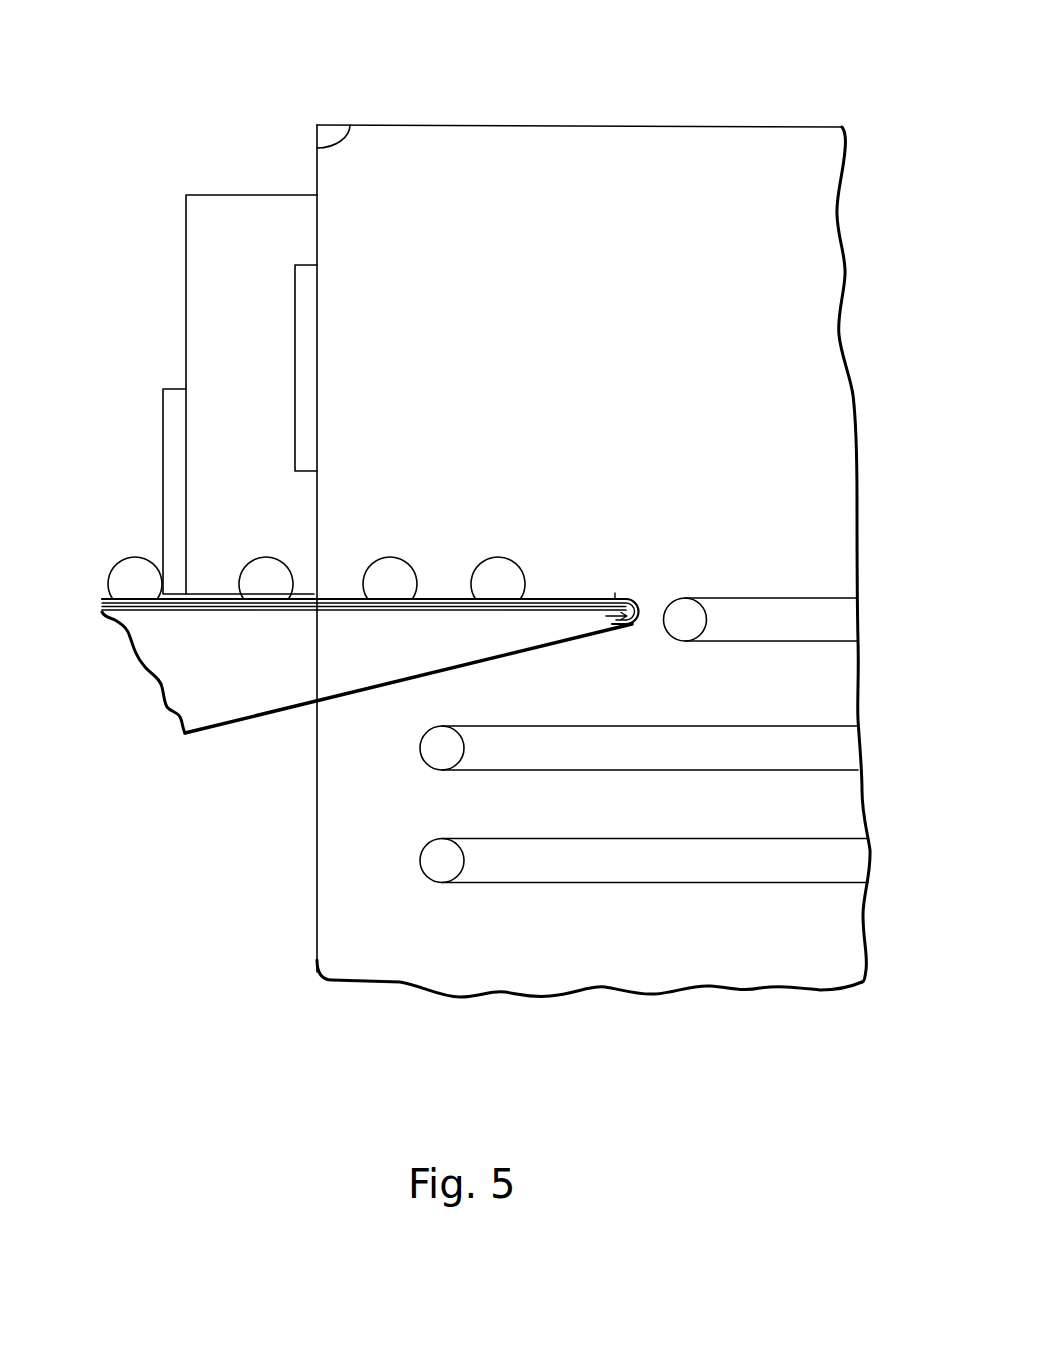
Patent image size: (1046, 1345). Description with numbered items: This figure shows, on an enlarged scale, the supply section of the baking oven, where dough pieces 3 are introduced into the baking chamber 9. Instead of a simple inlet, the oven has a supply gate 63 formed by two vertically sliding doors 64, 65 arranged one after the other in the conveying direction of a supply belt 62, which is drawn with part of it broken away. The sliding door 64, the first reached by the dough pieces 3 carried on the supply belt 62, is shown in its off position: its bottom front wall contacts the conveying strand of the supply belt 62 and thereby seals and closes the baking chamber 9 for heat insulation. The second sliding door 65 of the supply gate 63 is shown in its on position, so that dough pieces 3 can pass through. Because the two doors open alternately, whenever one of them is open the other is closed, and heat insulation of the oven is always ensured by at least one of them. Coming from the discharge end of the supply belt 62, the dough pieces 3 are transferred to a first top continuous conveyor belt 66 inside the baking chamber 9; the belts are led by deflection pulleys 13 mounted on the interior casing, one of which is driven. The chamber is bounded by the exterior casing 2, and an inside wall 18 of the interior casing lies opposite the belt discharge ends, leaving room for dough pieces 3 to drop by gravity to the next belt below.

The exterior casing 2 is at (546, 125).
The inside wall 18 is at (350, 125).
The supply gate 63 is at (235, 195).
The second sliding door 65 is at (295, 343).
The sliding door 64 is at (168, 457).
The dough pieces 3 is at (128, 580).
The supply belt 62 is at (587, 612).
The first top continuous conveyor belt 66 is at (750, 598).
The deflection pulley 13 is at (683, 628).
The baking chamber 9 is at (612, 959).